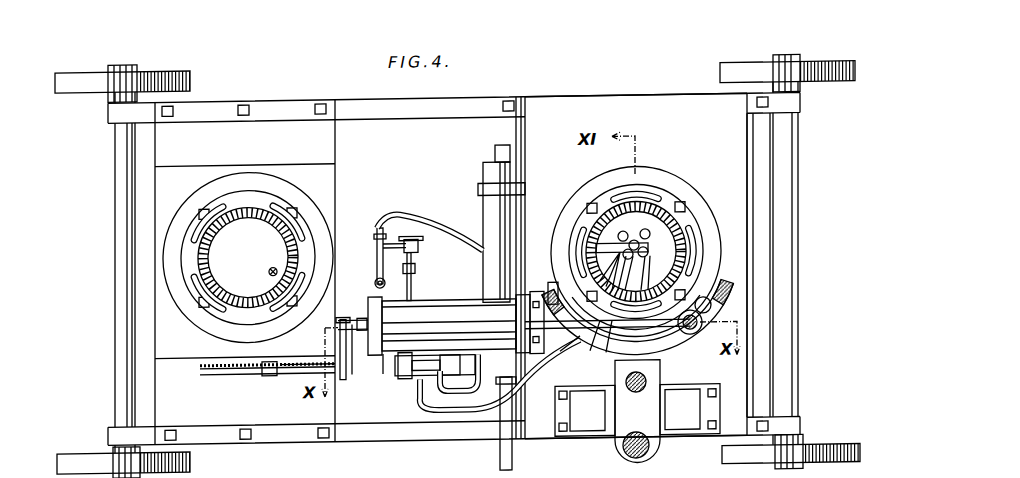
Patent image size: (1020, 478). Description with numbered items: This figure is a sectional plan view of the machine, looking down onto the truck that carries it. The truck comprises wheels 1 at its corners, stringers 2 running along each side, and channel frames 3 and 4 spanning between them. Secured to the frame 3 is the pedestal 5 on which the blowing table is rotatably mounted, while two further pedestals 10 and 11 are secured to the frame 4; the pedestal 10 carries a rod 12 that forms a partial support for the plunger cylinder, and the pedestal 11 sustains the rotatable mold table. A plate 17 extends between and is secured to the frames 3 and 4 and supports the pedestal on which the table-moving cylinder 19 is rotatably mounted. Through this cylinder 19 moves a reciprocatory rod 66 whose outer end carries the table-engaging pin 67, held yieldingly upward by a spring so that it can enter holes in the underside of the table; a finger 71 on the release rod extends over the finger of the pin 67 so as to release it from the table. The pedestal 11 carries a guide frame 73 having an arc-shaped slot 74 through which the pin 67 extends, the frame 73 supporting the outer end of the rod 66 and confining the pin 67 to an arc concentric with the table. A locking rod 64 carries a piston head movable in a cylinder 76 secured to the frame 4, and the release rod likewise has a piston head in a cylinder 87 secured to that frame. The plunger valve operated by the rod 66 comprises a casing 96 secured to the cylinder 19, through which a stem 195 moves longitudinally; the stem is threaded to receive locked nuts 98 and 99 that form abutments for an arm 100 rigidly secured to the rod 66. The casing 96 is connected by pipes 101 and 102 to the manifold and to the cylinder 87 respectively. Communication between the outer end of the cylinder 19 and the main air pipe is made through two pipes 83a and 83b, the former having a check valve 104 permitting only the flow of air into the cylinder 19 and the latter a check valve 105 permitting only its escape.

The wheels 1 is at (174, 65).
The stringers 2 is at (378, 94).
The channel frame 3 is at (335, 148).
The channel frame 4 is at (576, 95).
The pedestal 5 is at (233, 222).
The pedestal 10 is at (590, 424).
The pedestal 11 is at (683, 234).
The rod 12 is at (652, 457).
The plate 17 is at (383, 374).
The table-moving cylinder 19 is at (465, 319).
The locking rod 64 is at (637, 411).
The reciprocatory rod 66 is at (612, 332).
The table-engaging pin 67 is at (693, 346).
The finger 71 is at (558, 267).
The guide frame 73 is at (717, 303).
The arc-shaped slot 74 is at (562, 301).
The cylinder 76 is at (665, 388).
The pipe 83a is at (378, 252).
The pipe 83b is at (412, 258).
The cylinder 87 is at (566, 372).
The valve casing 96 is at (408, 384).
The locked nut 98 is at (360, 354).
The locked nut 99 is at (242, 376).
The arm 100 is at (344, 346).
The pipe 101 is at (500, 380).
The pipe 102 is at (437, 427).
The check valve 104 is at (365, 288).
The check valve 105 is at (411, 304).
The stem 195 is at (272, 376).